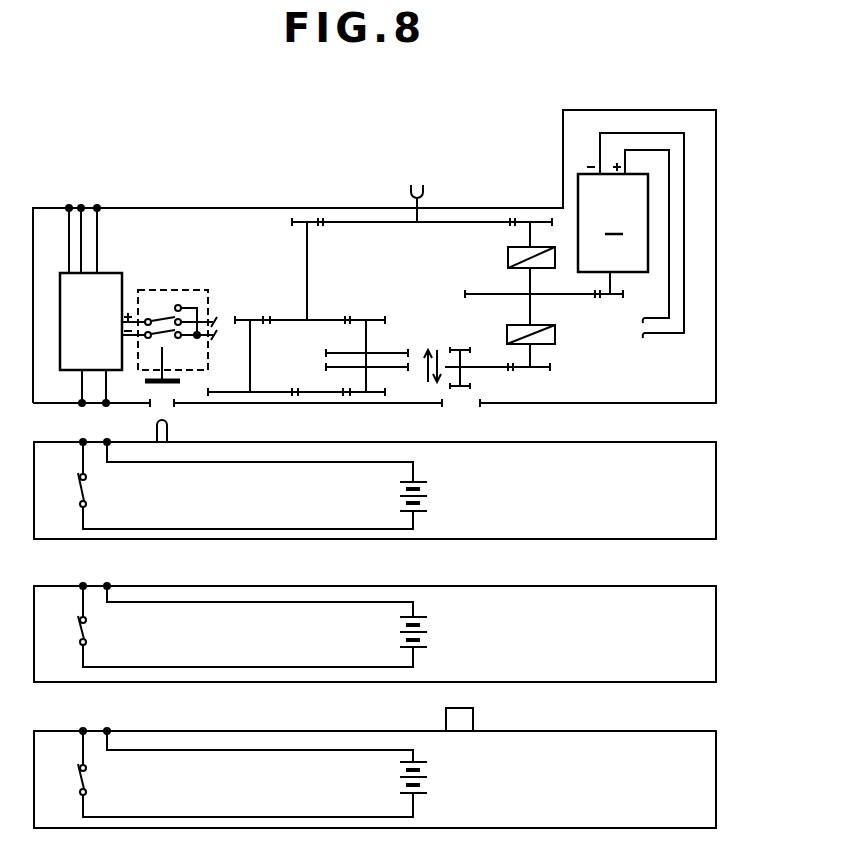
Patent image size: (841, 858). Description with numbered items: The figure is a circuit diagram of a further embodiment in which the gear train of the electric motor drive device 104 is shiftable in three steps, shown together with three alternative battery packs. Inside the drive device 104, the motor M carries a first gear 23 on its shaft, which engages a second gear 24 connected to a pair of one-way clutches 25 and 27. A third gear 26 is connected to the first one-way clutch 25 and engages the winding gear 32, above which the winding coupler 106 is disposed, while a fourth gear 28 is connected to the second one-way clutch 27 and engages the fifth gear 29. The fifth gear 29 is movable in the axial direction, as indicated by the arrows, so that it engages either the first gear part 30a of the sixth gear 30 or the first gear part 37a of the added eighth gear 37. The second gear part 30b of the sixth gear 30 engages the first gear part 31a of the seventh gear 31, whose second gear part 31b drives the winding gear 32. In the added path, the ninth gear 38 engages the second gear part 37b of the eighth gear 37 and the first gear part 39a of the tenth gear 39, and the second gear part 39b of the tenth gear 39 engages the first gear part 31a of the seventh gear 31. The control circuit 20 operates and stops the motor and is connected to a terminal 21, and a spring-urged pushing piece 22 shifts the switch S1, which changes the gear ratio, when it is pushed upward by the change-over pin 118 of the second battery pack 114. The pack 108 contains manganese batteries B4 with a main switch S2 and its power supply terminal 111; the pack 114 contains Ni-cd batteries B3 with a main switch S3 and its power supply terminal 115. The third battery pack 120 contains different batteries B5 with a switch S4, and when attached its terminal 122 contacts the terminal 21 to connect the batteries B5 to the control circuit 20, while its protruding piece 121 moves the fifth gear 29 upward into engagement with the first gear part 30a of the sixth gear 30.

The control circuit 20 is at (107, 280).
The terminal 21 is at (90, 408).
The pushing piece 22 is at (165, 358).
The first gear 23 is at (631, 237).
The second gear 24 is at (468, 292).
The first one-way clutch 25 is at (508, 247).
The third gear 26 is at (518, 220).
The second one-way clutch 27 is at (556, 335).
The fourth gear 28 is at (540, 370).
The fifth gear 29 is at (473, 351).
The sixth gear 30 is at (368, 333).
The first gear part of sixth gear 30a is at (338, 352).
The second gear part of sixth gear 30b is at (352, 318).
The seventh gear 31 is at (307, 258).
The first gear part of seventh gear 31a is at (283, 318).
The second gear part of seventh gear 31b is at (300, 216).
The winding gear 32 is at (460, 220).
The eighth gear 37 is at (368, 378).
The first gear part of eighth gear 37a is at (335, 369).
The second gear part of eighth gear 37b is at (372, 396).
The ninth gear 38 is at (318, 396).
The tenth gear 39 is at (252, 349).
The first gear part of tenth gear 39a is at (266, 395).
The second gear part of tenth gear 39b is at (245, 318).
The electric motor drive device 104 is at (764, 374).
The winding coupler 106 is at (410, 184).
The battery pack 108 is at (764, 654).
The power supply terminal 111 is at (95, 586).
The second battery pack 114 is at (764, 509).
The power supply terminal 115 is at (92, 440).
The change-over pin 118 is at (170, 431).
The third battery pack 120 is at (764, 794).
The protruding piece 121 is at (474, 720).
The terminal 122 is at (95, 731).
The switch S1 is at (165, 290).
The main switch S2 is at (87, 632).
The main switch S3 is at (87, 492).
The switch S4 is at (87, 780).
The Ni-cd batteries B3 is at (428, 500).
The manganese batteries B4 is at (428, 635).
The batteries B5 is at (428, 780).